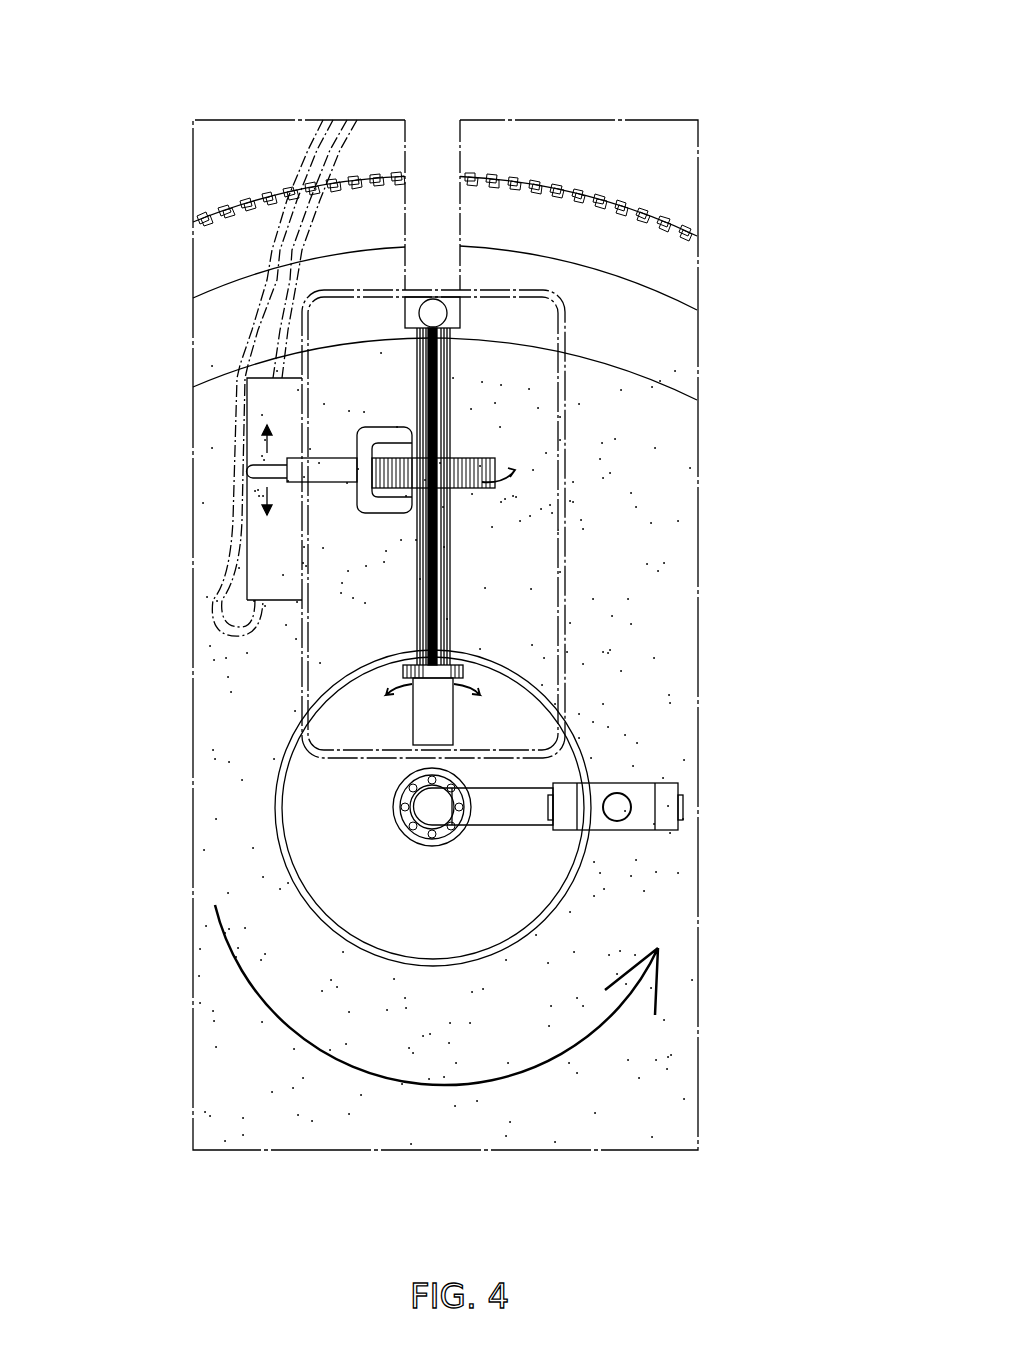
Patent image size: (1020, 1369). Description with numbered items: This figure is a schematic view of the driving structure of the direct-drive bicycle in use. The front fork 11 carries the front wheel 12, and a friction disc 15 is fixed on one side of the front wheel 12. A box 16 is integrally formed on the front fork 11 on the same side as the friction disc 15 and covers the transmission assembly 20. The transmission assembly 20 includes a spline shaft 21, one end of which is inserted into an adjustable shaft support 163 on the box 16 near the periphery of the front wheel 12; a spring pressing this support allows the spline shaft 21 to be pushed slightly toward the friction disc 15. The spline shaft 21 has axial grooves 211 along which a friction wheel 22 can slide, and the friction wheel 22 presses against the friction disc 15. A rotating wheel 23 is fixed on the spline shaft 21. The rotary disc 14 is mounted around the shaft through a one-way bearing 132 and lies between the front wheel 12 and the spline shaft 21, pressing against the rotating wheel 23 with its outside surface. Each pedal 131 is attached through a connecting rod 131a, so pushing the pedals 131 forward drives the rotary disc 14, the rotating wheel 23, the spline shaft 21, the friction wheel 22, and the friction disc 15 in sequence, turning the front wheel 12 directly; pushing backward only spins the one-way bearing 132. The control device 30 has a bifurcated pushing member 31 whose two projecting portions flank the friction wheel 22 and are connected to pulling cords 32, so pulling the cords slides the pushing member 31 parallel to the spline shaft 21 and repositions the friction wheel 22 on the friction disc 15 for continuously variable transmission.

The front fork 11 is at (462, 160).
The front wheel 12 is at (650, 253).
The rotary disc 14 is at (285, 802).
The friction disc 15 is at (627, 390).
The box 16 is at (302, 668).
The adjustable shaft support 163 is at (443, 317).
The transmission assembly 20 is at (473, 530).
The spline shaft 21 is at (437, 730).
The grooves 211 is at (437, 580).
The friction wheel 22 is at (495, 462).
The rotating wheel 23 is at (452, 670).
The control device 30 is at (235, 344).
The bifurcated pushing member 31 is at (365, 440).
The pulling cord 32 is at (316, 152).
The pedal 131 is at (678, 822).
The connecting rod 131a is at (527, 808).
The one-way bearing 132 is at (418, 840).